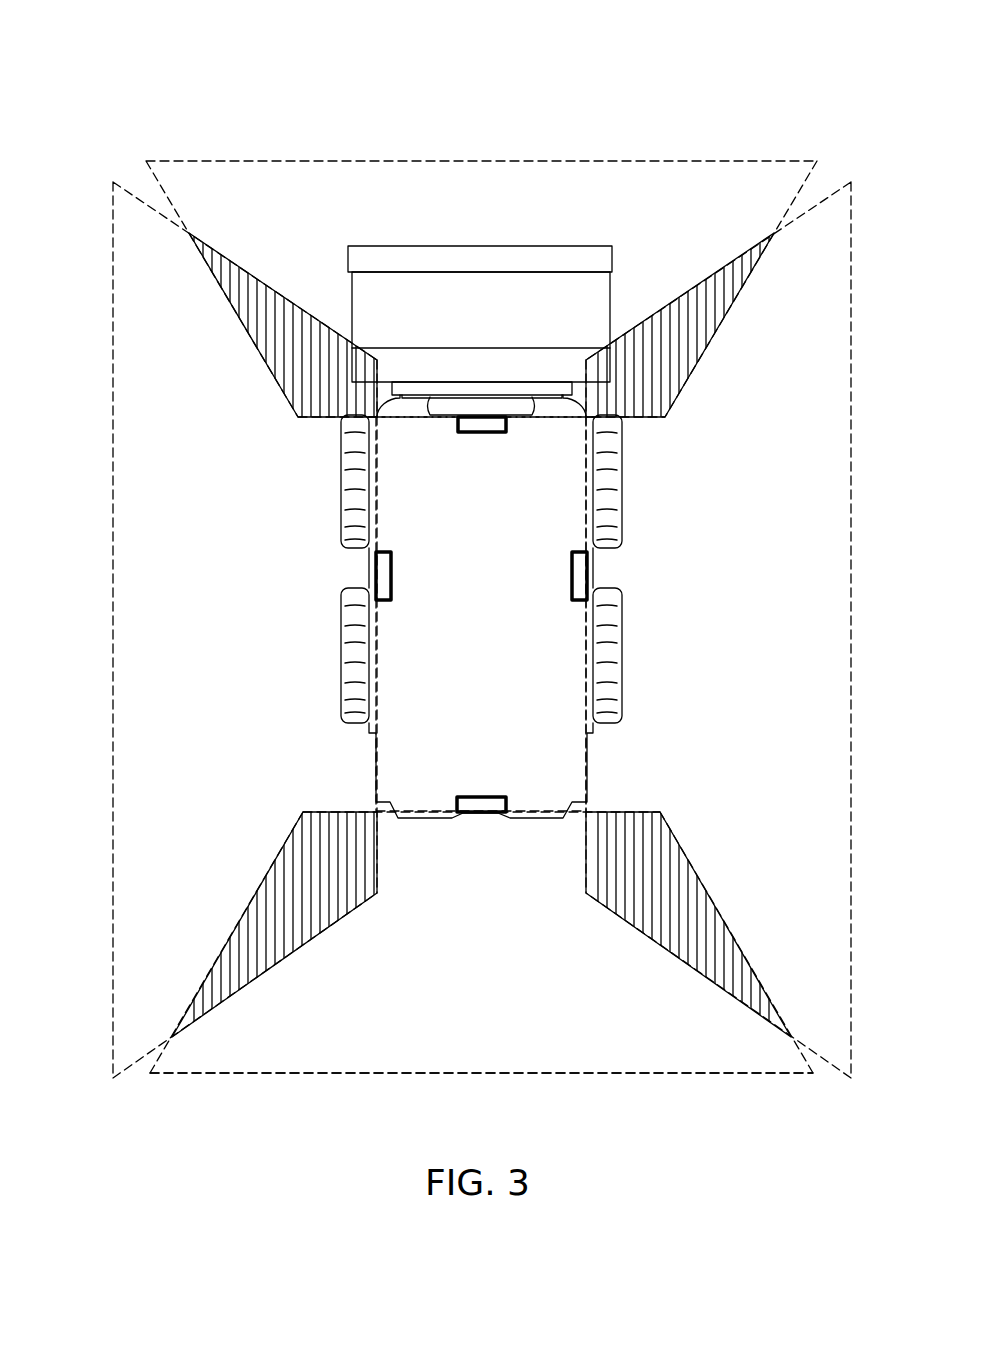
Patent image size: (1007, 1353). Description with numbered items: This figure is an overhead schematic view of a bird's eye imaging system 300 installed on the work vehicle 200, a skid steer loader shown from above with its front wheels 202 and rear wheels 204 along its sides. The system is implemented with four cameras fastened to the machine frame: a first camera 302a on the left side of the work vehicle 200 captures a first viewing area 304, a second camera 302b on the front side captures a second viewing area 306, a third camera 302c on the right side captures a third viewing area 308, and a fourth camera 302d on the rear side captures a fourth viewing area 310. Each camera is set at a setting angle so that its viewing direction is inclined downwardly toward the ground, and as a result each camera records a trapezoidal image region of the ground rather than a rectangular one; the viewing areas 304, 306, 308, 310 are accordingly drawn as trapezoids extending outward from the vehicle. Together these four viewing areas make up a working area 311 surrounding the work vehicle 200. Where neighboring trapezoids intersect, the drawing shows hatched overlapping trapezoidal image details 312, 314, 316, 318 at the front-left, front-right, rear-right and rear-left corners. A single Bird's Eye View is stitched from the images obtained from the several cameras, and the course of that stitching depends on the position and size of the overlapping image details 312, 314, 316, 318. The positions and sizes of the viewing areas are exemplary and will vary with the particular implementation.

The bird's eye imaging system 300 is at (714, 76).
The work vehicle 200 is at (505, 630).
The front wheels 202 is at (340, 495).
The rear wheels 204 is at (340, 670).
The first camera 302a is at (392, 577).
The second camera 302b is at (468, 435).
The third camera 302c is at (570, 587).
The fourth camera 302d is at (487, 797).
The first viewing area 304 is at (155, 607).
The second viewing area 306 is at (342, 194).
The third viewing area 308 is at (775, 635).
The fourth viewing area 310 is at (330, 995).
The working area 311 is at (533, 988).
The overlapping trapezoidal image detail 312 is at (287, 358).
The overlapping trapezoidal image detail 314 is at (673, 363).
The overlapping trapezoidal image detail 316 is at (693, 910).
The overlapping trapezoidal image detail 318 is at (282, 912).